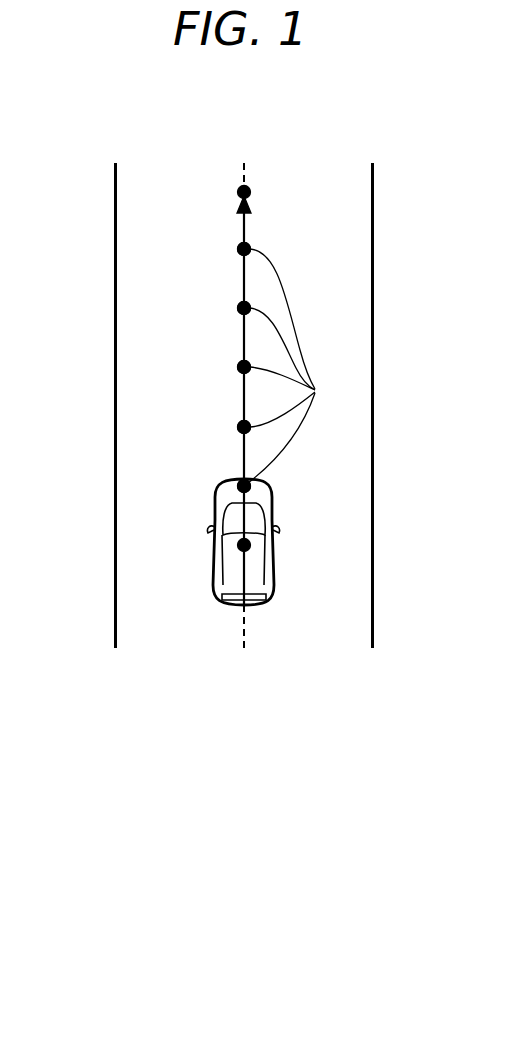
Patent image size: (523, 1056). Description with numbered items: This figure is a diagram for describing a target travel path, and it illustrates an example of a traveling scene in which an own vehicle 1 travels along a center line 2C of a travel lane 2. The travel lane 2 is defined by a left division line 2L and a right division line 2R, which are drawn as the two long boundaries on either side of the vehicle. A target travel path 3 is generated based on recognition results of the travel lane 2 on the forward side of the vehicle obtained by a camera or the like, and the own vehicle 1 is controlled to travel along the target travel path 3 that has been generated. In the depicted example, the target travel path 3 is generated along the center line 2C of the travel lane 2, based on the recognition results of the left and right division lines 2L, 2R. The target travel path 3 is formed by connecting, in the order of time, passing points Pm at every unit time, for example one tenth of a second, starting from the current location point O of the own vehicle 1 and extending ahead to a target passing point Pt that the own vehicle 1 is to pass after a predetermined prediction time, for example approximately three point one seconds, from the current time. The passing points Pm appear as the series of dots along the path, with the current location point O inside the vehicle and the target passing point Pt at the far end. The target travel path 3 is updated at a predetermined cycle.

The own vehicle 1 is at (212, 545).
The travel lane 2 is at (138, 421).
The left division line 2L is at (115, 240).
The right division line 2R is at (373, 238).
The center line 2C is at (250, 636).
The target travel path 3 is at (246, 222).
The target passing point Pt is at (250, 192).
The passing points Pm is at (300, 368).
The current location point O is at (250, 545).